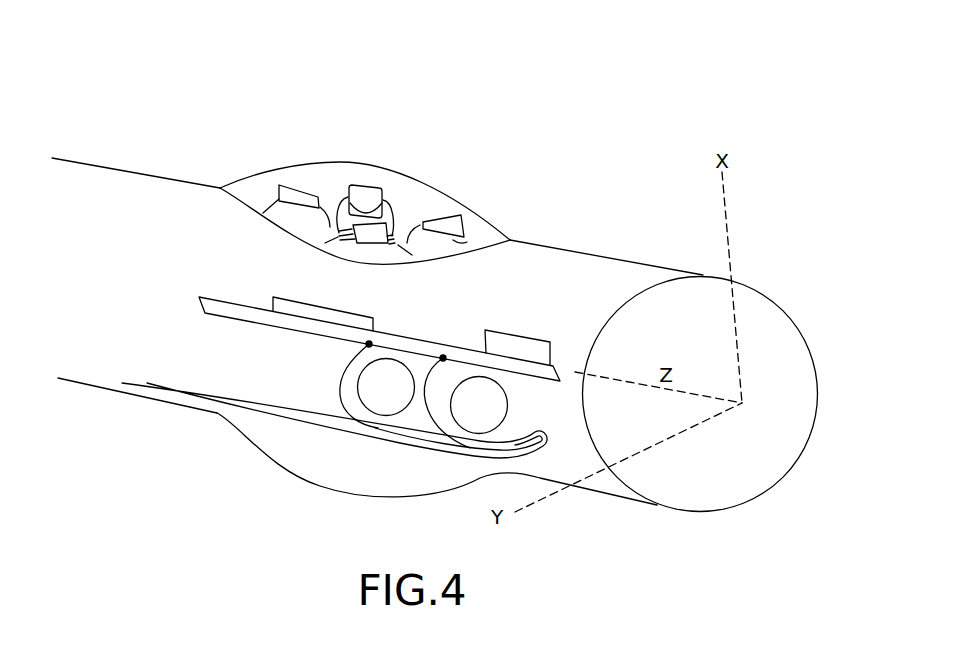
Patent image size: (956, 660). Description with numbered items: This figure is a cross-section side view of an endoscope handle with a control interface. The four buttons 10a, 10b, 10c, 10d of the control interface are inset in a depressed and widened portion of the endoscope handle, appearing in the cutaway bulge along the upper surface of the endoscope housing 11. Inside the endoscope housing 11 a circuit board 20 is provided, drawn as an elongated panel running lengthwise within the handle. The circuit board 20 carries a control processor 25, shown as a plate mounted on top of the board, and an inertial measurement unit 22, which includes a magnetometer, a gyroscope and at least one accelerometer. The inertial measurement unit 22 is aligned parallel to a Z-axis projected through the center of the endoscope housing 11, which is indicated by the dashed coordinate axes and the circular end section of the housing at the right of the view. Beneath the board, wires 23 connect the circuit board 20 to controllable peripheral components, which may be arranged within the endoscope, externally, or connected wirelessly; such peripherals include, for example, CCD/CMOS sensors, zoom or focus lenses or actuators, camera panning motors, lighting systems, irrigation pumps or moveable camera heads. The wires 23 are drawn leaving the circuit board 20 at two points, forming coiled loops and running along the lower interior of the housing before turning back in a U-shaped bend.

The endoscope housing 11 is at (103, 167).
The first antenna element 10a is at (297, 197).
The second antenna element 10b is at (467, 243).
The third antenna element 10c is at (367, 193).
The antenna base plate 10d is at (390, 233).
The circuit board 20 is at (203, 312).
The inertial measurement unit 22 is at (533, 343).
The wires 23 is at (254, 399).
The control processor 25 is at (278, 303).